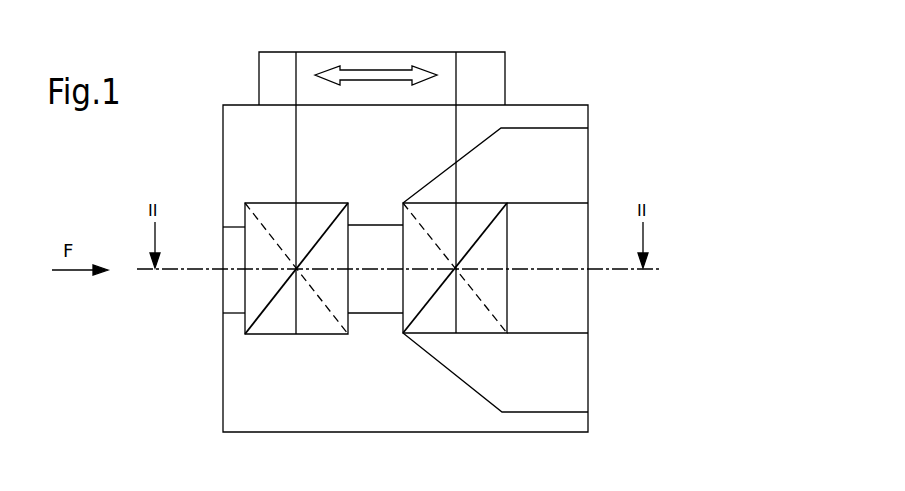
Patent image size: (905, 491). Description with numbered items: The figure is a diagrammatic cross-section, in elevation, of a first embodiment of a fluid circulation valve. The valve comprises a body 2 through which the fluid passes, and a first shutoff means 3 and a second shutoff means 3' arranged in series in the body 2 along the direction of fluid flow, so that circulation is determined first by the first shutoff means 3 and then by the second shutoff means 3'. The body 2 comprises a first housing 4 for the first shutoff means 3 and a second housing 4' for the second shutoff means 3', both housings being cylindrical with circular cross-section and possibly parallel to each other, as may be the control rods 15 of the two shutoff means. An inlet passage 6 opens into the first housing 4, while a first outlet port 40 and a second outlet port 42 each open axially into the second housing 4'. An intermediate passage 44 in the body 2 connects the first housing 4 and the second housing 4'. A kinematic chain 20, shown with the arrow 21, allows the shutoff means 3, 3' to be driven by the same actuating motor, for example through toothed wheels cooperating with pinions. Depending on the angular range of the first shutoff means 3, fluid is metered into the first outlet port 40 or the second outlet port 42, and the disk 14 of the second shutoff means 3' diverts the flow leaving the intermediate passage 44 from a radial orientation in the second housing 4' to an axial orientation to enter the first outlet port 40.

The body 2 is at (222, 397).
The first shutoff means 3 is at (294, 346).
The second shutoff means 3' is at (449, 357).
The first housing 4 is at (301, 235).
The second housing 4' is at (474, 249).
The inlet passage 6 is at (235, 237).
The disk 14 is at (273, 298).
The control rods 15 is at (293, 160).
The kinematic chain 20 is at (477, 37).
The arrow 21 is at (395, 77).
The first outlet port 40 is at (575, 152).
The second outlet port 42 is at (562, 370).
The intermediate passage 44 is at (368, 233).